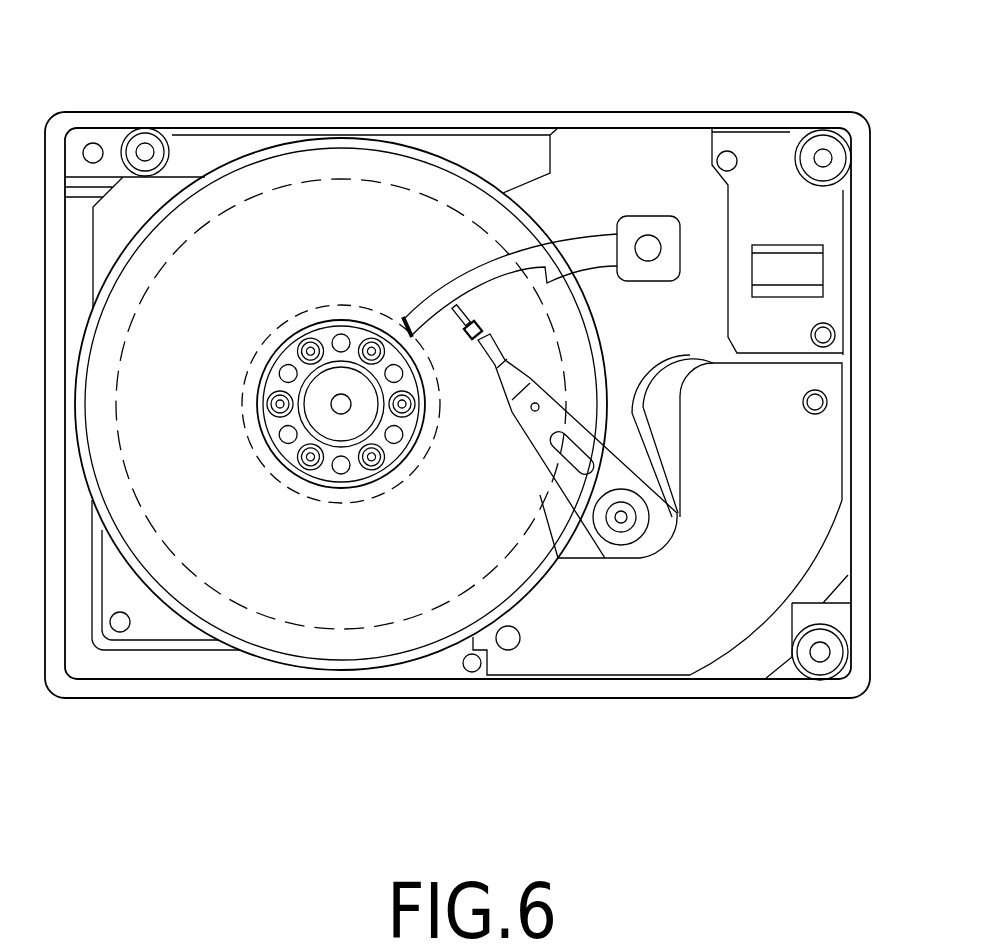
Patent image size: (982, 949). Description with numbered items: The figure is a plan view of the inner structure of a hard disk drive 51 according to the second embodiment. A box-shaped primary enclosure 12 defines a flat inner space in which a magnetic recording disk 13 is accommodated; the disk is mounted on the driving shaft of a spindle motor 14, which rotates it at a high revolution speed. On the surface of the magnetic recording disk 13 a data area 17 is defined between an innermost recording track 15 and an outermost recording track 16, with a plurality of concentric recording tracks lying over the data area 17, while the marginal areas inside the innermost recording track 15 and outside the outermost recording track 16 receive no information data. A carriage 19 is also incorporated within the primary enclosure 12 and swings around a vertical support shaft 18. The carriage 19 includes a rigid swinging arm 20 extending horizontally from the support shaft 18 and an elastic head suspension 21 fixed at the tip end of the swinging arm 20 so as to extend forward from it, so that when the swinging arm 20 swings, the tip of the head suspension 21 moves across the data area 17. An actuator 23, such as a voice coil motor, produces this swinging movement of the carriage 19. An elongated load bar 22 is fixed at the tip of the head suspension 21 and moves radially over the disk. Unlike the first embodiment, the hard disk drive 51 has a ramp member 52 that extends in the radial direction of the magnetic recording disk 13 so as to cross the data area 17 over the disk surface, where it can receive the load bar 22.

The primary enclosure 12 is at (499, 698).
The magnetic recording disk 13 is at (517, 218).
The spindle motor 14 is at (324, 430).
The innermost recording track 15 is at (251, 370).
The outermost recording track 16 is at (118, 423).
The data area 17 is at (332, 617).
The support shaft 18 is at (623, 518).
The carriage 19 is at (560, 358).
The swinging arm 20 is at (555, 445).
The head suspension 21 is at (481, 345).
The load bar 22 is at (457, 321).
The actuator 23 is at (752, 668).
The hard disk drive 51 is at (513, 90).
The ramp member 52 is at (670, 182).